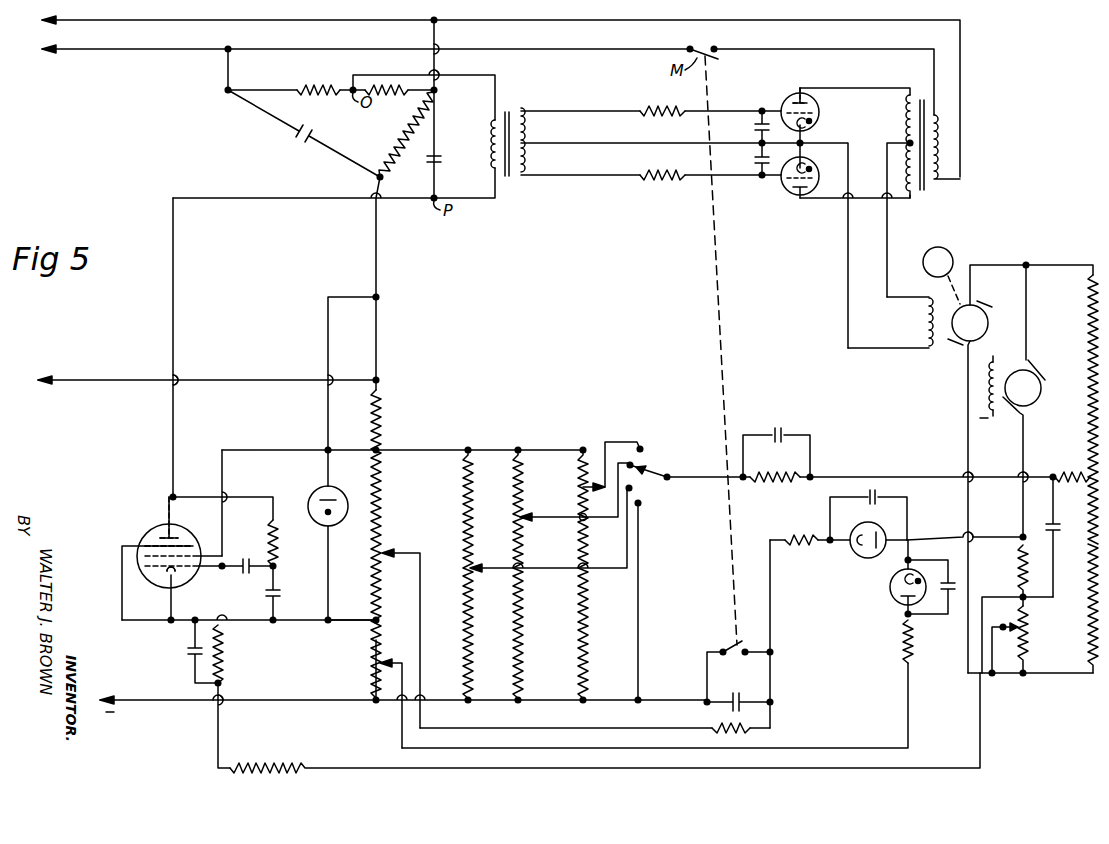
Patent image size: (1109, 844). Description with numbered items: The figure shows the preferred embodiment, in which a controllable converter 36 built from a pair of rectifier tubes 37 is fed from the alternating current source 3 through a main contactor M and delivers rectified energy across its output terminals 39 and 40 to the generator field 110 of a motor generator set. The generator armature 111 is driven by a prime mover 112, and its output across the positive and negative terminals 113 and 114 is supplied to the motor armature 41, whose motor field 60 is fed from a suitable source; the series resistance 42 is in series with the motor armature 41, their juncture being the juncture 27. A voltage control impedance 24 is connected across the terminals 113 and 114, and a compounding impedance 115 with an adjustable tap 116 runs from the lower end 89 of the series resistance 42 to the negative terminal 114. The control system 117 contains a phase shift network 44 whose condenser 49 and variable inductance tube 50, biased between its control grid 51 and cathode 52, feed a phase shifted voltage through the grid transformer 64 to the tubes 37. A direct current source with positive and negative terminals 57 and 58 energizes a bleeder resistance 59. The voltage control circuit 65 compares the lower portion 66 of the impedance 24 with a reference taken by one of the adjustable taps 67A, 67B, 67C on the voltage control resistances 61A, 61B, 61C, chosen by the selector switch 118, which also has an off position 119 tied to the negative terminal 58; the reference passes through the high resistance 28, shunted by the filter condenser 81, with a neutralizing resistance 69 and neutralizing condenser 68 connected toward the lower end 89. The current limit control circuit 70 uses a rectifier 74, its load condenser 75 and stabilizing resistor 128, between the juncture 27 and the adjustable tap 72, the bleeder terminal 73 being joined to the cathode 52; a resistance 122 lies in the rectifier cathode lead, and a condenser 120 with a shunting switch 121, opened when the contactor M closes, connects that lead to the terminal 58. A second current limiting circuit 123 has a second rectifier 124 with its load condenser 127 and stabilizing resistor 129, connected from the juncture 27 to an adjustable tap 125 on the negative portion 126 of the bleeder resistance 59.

The alternating current source 3 is at (402, 53).
The phase shift network 44 is at (306, 187).
The condenser 49 is at (438, 158).
The grid transformer 64 is at (545, 105).
The converter 36 is at (863, 128).
The rectifier tubes 37 is at (811, 166).
The motor or prime mover 112 is at (953, 257).
The positive terminal 113 is at (1027, 265).
The converter output terminal 39 is at (908, 287).
The generator field 110 is at (925, 323).
The negative converter terminal 40 is at (888, 362).
The generator armature 111 is at (990, 324).
The voltage control impedance 24 is at (1090, 372).
The motor armature 41 is at (1040, 399).
The motor field 60 is at (1000, 414).
The positive terminal 57 is at (127, 390).
The negative terminal 58 is at (138, 706).
The control system 117 is at (494, 440).
The selector switch 118 is at (649, 481).
The off position 119 is at (642, 507).
The filter condenser 81 is at (781, 433).
The high resistance 28 is at (790, 472).
The voltage control circuit 65 is at (860, 470).
The neutralizing resistance 69 is at (1071, 467).
The bleeder resistance 59 is at (383, 497).
The voltage control resistance 61A is at (462, 492).
The voltage control resistance 61B is at (511, 493).
The voltage control resistance 61C is at (578, 485).
The adjustable tap 67A is at (485, 565).
The adjustable tap 67B is at (530, 520).
The adjustable tap 67C is at (613, 479).
The rectifier load condenser 75 is at (878, 495).
The stabilizing resistor 128 is at (808, 534).
The variable inductance tube 50 is at (192, 535).
The control grid 51 is at (152, 581).
The cathode 52 is at (177, 578).
The adjustable tap 72 is at (405, 551).
The juncture 27 is at (1020, 535).
The neutralizing condenser 68 is at (1056, 523).
The current limit control circuit 70 is at (824, 566).
The rectifier 74 is at (864, 557).
The series resistance 42 is at (1018, 568).
The lower portion 66 is at (1090, 581).
The second rectifier 124 is at (899, 600).
The rectifier load condenser 127 is at (950, 596).
The stabilizing resistor 129 is at (904, 643).
The lower end 89 is at (1026, 599).
The compounding impedance 115 is at (1030, 641).
The adjustable tap 116 is at (1004, 633).
The negative terminal 114 is at (1024, 675).
The terminal 73 is at (371, 622).
The adjustable tap 125 is at (393, 660).
The negative portion 126 is at (368, 655).
The shunting switch 121 is at (740, 671).
The condenser 120 is at (738, 694).
The second current limiting circuit 123 is at (893, 682).
The resistance 122 is at (752, 732).